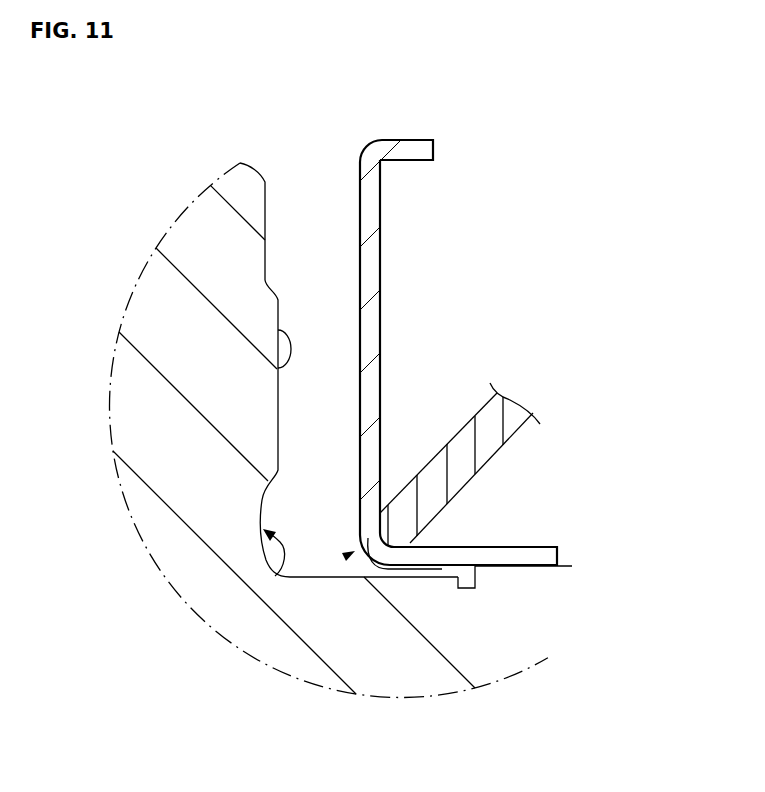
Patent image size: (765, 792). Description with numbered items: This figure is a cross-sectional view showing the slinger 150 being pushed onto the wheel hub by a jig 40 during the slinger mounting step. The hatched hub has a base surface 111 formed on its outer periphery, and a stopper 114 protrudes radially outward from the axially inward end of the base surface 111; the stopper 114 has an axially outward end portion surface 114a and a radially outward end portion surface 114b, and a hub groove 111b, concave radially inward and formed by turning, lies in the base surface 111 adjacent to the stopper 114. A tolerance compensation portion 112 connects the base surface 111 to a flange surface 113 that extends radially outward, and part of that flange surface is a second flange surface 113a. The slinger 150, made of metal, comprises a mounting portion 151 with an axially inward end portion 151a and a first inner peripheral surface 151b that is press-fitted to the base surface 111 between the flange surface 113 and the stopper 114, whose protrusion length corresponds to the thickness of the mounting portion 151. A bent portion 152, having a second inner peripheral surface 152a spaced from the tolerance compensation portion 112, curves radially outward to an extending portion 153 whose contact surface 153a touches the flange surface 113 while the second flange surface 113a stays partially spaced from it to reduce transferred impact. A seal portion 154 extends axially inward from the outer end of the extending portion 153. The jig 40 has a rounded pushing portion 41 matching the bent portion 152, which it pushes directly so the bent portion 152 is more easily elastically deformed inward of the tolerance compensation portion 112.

The jig 40 is at (462, 430).
The pushing portion 41 is at (378, 476).
The base surface 111 is at (366, 577).
The hub groove 111b is at (487, 570).
The tolerance compensation portion 112 is at (278, 574).
The flange surface 113 is at (277, 367).
The second flange surface 113a is at (265, 236).
The stopper 114 is at (476, 567).
The axially outward end portion surface 114a is at (482, 568).
The radially outward end portion surface 114b is at (492, 573).
The slinger 150 is at (501, 409).
The mounting portion 151 is at (558, 546).
The axially inward end portion 151a is at (558, 556).
The first inner peripheral surface 151b is at (445, 565).
The bent portion 152 is at (346, 554).
The second inner peripheral surface 152a is at (450, 547).
The extending portion 153 is at (372, 220).
The contact surface 153a is at (358, 258).
The seal portion 154 is at (412, 151).